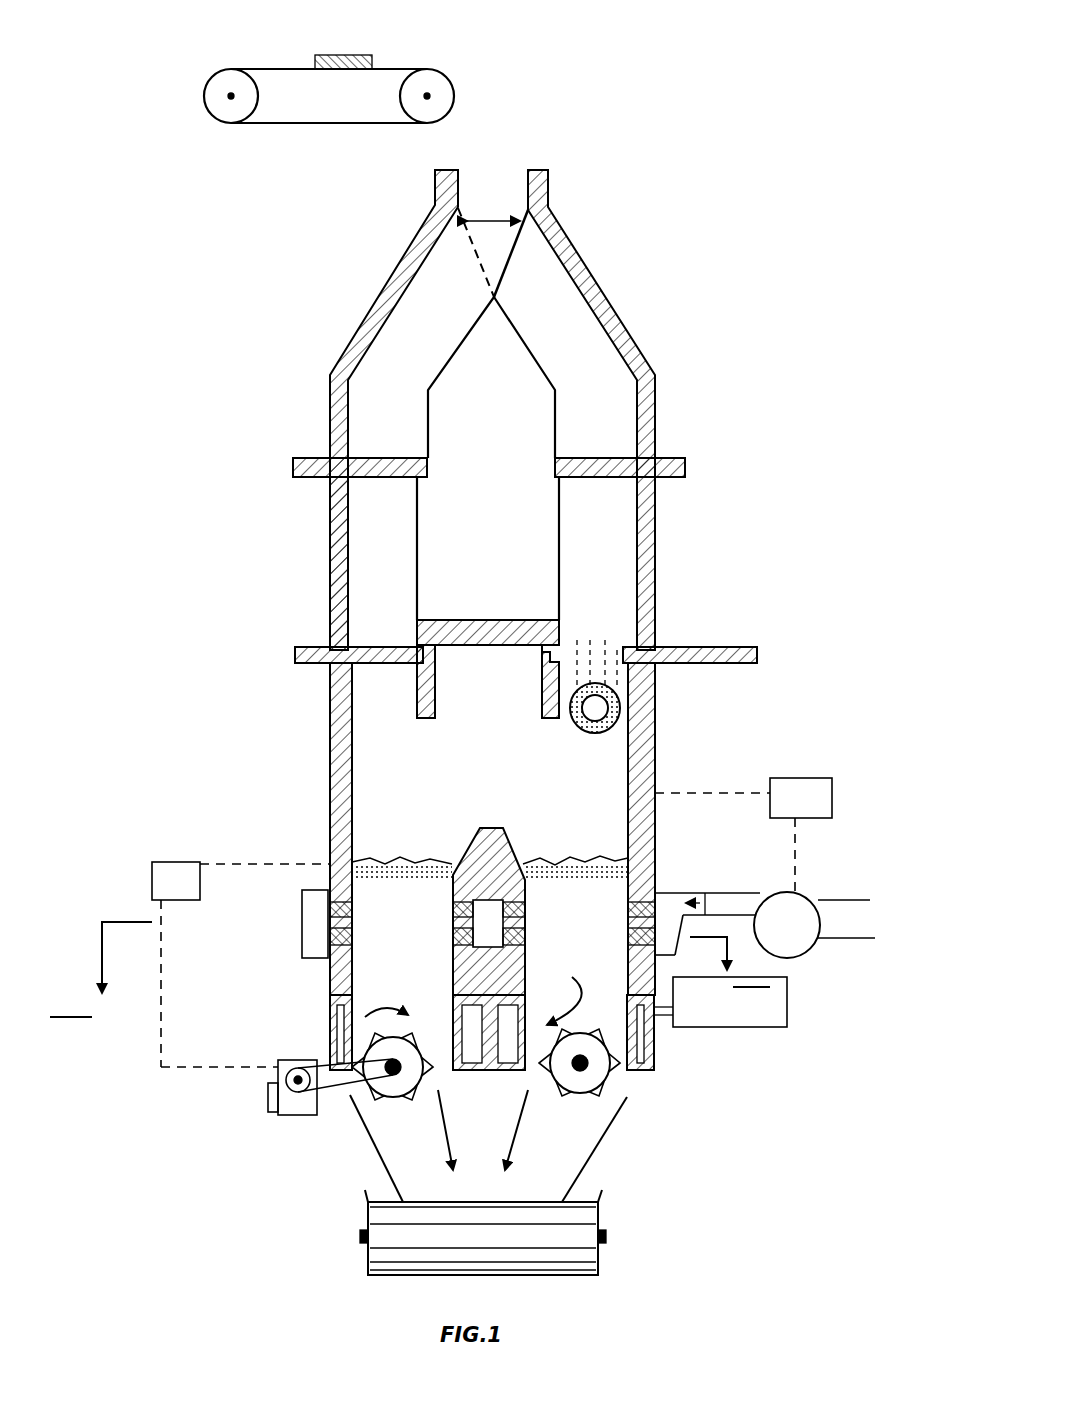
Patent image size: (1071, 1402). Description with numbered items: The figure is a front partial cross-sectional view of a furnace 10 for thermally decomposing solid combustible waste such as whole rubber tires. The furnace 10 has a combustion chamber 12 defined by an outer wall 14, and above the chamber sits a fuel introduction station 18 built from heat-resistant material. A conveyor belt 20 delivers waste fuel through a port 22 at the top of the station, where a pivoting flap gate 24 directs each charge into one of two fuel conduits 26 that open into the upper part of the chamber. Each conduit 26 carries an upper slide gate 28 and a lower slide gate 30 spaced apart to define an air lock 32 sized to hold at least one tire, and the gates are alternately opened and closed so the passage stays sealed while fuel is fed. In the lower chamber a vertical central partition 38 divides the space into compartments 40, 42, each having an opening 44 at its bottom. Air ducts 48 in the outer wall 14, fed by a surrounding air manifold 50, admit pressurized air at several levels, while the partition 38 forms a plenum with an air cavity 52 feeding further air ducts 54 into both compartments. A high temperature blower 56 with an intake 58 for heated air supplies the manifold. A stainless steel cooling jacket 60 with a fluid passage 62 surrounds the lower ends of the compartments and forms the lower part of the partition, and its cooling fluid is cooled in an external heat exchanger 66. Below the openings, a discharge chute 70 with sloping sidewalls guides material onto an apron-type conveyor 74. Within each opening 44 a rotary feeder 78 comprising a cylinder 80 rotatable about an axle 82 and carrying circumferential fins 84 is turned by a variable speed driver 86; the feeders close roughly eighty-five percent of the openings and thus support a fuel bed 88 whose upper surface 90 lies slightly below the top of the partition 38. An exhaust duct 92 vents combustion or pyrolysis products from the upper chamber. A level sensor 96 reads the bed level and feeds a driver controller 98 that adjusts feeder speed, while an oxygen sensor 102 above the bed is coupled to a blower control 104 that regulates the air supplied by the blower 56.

The furnace 10 is at (663, 330).
The combustion chamber 12 is at (655, 768).
The outer wall 14 is at (653, 692).
The fuel introduction station 18 is at (580, 250).
The conveyor belt 20 is at (400, 77).
The port 22 is at (502, 177).
The flap gate 24 is at (515, 257).
The fuel conduit 26 is at (398, 417).
The upper slide gate 28 is at (617, 462).
The lower slide gate 30 is at (683, 643).
The air lock 32 is at (380, 547).
The central partition 38 is at (497, 860).
The lower compartment 40 is at (408, 911).
The lower compartment 42 is at (570, 948).
The opening 44 is at (527, 1080).
The air duct 48 is at (655, 922).
The air manifold 50 is at (303, 940).
The air cavity 52 is at (450, 977).
The air duct 54 is at (477, 938).
The blower 56 is at (810, 897).
The intake 58 is at (842, 920).
The cooling jacket 60 is at (660, 1052).
The fluid passage 62 is at (657, 1037).
The heat exchanger 66 is at (775, 997).
The discharge chute 70 is at (585, 1157).
The apron-type conveyor 74 is at (575, 1220).
The rotary feeder 78 is at (596, 1078).
The cylinder 80 is at (353, 1102).
The axle 82 is at (567, 1107).
The fins 84 is at (562, 994).
The variable speed driver 86 is at (278, 1115).
The fuel bed 88 is at (607, 885).
The upper surface 90 is at (607, 848).
The exhaust duct 92 is at (435, 672).
The level sensor 96 is at (377, 860).
The driver controller 98 is at (183, 860).
The oxygen sensor 102 is at (625, 822).
The blower control 104 is at (820, 777).